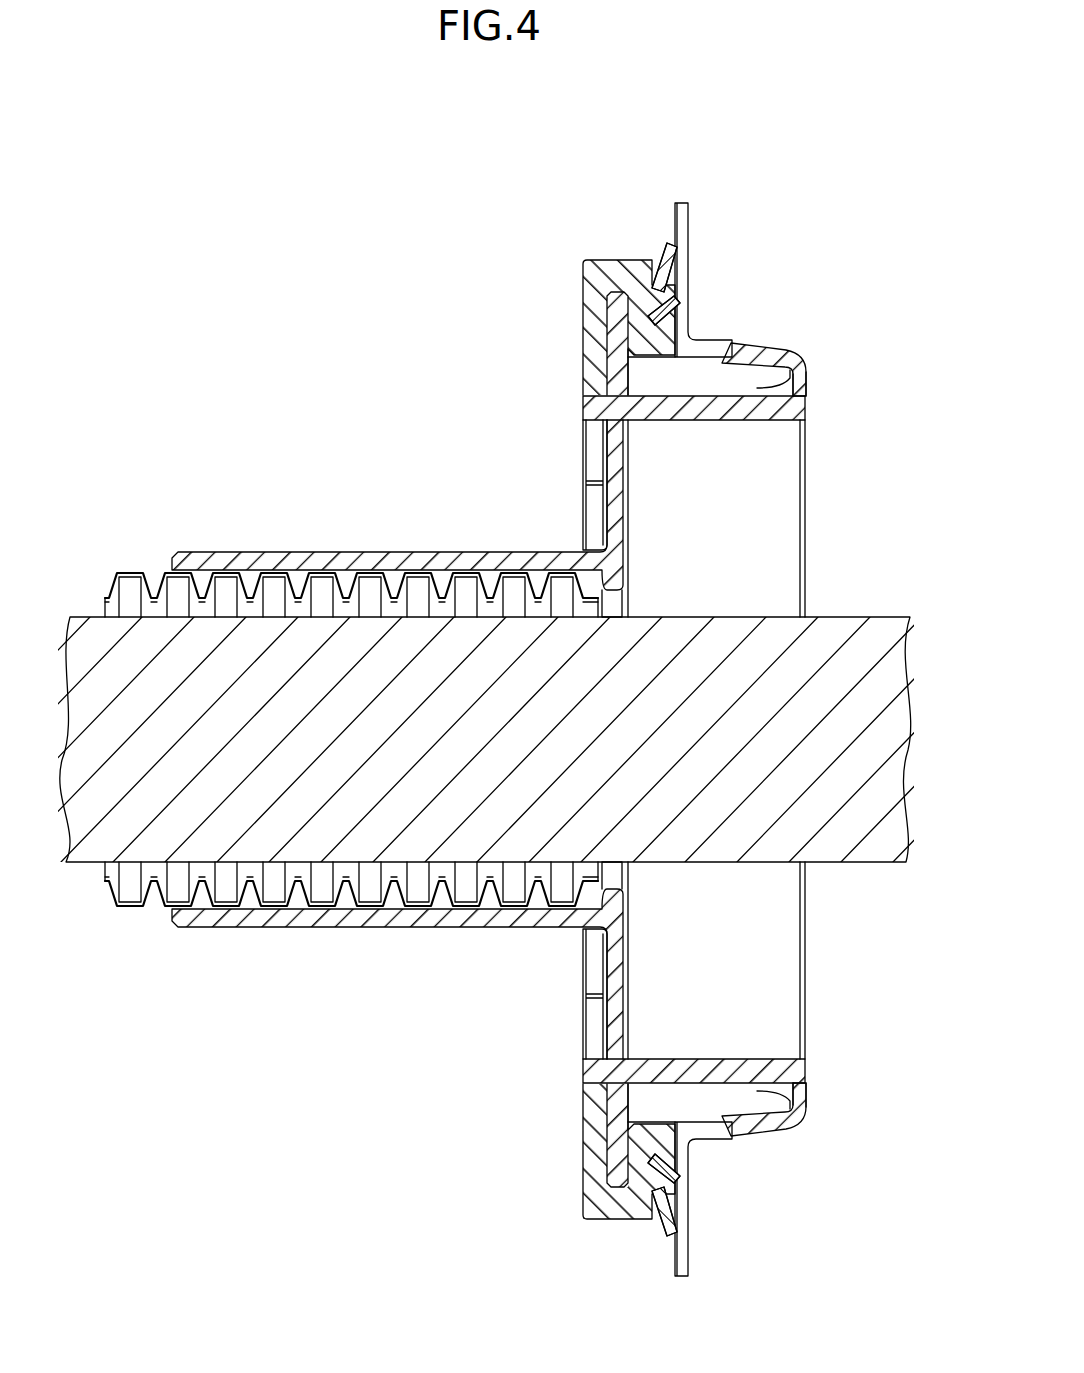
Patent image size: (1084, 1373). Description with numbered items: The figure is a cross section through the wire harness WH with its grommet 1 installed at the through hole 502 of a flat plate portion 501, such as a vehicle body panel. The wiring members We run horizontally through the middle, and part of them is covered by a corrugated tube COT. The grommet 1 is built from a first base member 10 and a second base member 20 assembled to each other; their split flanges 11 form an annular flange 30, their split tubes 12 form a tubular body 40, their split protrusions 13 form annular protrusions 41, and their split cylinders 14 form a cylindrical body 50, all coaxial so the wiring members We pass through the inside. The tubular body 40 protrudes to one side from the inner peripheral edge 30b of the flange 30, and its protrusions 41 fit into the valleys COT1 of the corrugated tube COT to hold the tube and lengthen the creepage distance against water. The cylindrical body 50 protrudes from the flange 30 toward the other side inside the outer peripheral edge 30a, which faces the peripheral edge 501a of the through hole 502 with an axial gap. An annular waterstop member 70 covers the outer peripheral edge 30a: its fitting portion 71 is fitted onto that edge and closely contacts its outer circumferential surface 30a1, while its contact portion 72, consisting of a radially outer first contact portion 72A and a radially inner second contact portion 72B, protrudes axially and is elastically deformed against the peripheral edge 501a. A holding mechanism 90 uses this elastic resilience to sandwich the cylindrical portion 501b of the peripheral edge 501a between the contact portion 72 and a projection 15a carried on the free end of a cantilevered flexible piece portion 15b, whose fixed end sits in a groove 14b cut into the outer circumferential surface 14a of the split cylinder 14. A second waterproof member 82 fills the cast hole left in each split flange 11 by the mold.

The grommet 1 is at (519, 162).
The first base member 10 is at (290, 1012).
The split flange 11 is at (600, 435).
The split tube 12 is at (420, 552).
The split protrusion 13 is at (323, 583).
The split cylinder 14 is at (727, 421).
The outer circumferential surface 14a is at (718, 378).
The groove 14b is at (757, 388).
The projection 15a is at (748, 345).
The flexible piece portion 15b is at (795, 355).
The second base member 20 is at (279, 464).
The flange 30 is at (585, 695).
The outer peripheral edge 30a is at (606, 296).
The outer circumferential surface 30a1 is at (627, 262).
The inner peripheral edge 30b is at (583, 522).
The tubular body 40 is at (397, 739).
The protrusion 41 is at (351, 732).
The cylindrical body 50 is at (763, 732).
The waterstop member 70 is at (561, 278).
The fitting portion 71 is at (596, 260).
The contact portion 72 is at (742, 671).
The first contact portion 72A is at (665, 246).
The second contact portion 72B is at (688, 300).
The second waterproof member 82 is at (612, 353).
The holding mechanism 90 is at (785, 671).
The flat plate portion 501 is at (686, 201).
The peripheral edge 501a is at (703, 1130).
The cylindrical portion 501b is at (712, 333).
The through hole 502 is at (712, 1140).
The wire harness WH is at (416, 147).
The wiring member We is at (868, 614).
The corrugated tube COT is at (105, 584).
The valley COT1 is at (156, 583).